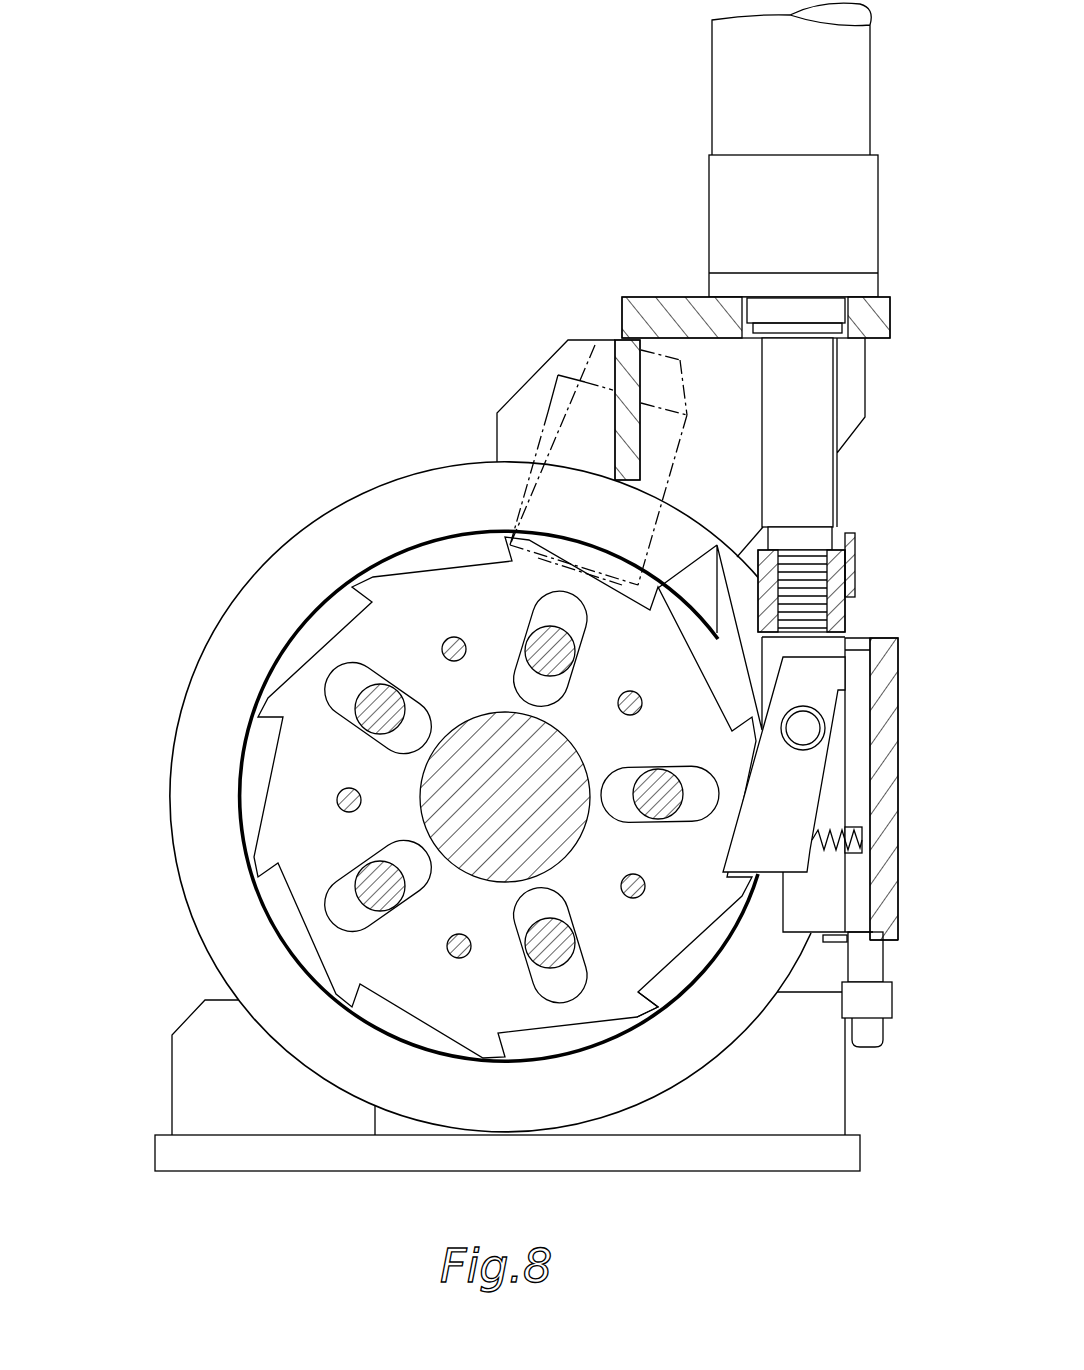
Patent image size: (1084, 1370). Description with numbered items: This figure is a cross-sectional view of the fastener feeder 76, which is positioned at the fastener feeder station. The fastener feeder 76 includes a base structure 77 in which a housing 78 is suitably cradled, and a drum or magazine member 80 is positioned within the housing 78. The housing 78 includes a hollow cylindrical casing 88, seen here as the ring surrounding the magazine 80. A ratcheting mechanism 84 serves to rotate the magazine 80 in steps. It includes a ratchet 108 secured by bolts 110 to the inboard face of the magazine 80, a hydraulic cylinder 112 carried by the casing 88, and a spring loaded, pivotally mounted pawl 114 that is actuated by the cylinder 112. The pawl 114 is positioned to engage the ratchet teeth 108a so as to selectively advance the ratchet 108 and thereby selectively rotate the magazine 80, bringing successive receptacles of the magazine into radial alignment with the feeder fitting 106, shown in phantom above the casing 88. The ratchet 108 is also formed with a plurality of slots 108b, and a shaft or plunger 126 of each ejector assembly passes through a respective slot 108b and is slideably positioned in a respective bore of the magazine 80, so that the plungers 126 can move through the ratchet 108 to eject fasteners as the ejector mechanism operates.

The fastener feeder 76 is at (316, 392).
The base structure 77 is at (183, 1082).
The housing 78 is at (490, 778).
The drum or magazine member 80 is at (422, 778).
The ratcheting mechanism 84 is at (812, 780).
The hollow cylindrical casing 88 is at (250, 580).
The feeder fitting 106 is at (543, 388).
The ratchet 108 is at (514, 797).
The ratchet teeth 108a is at (652, 995).
The slot 108b is at (620, 775).
The bolts 110 is at (638, 697).
The hydraulic cylinder 112 is at (848, 104).
The pawl 114 is at (800, 818).
The shaft or plunger 126 is at (662, 790).